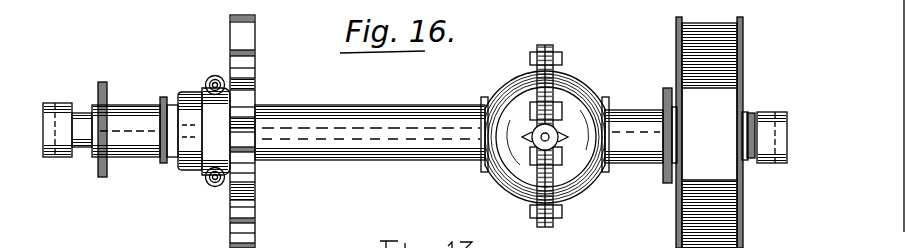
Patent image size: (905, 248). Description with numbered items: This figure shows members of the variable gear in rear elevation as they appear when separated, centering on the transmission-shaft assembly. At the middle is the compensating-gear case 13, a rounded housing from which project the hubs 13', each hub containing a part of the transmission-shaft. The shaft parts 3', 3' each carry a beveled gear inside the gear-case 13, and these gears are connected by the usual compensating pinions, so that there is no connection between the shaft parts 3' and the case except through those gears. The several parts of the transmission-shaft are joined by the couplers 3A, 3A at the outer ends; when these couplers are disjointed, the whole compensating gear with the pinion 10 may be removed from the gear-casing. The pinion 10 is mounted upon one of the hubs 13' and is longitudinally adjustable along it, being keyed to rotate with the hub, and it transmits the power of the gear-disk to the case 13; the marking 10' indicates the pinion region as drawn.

The coupler 3A is at (789, 104).
The transmission-shaft part 3' is at (418, 126).
The pinion 10 is at (257, 131).
The gear teeth 10' is at (259, 132).
The hub 13' is at (370, 120).
The compensating-gear case 13 is at (541, 136).